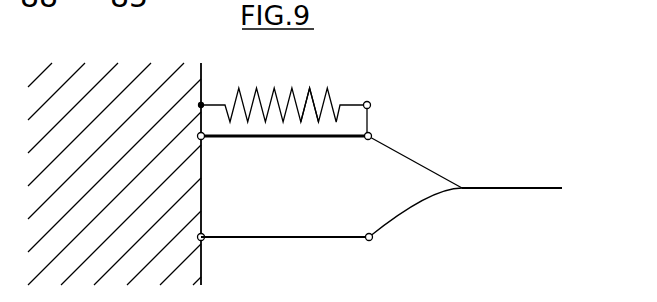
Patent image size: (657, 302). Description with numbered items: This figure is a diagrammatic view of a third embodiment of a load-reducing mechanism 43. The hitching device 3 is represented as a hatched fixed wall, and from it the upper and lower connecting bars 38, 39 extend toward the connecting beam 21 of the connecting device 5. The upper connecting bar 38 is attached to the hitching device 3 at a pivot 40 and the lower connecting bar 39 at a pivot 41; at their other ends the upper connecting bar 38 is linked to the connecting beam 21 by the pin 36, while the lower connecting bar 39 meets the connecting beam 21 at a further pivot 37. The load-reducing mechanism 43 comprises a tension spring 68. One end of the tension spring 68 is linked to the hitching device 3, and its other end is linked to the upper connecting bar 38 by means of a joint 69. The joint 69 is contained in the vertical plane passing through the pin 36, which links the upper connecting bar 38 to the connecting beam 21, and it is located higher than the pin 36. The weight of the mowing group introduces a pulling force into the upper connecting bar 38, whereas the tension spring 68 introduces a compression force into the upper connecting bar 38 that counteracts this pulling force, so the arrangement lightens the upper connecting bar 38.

The hitching device 3 is at (85, 70).
The connecting device 5 is at (554, 168).
The connecting beam 21 is at (492, 189).
The pin 36 is at (371, 133).
The pivot joint 37 is at (373, 241).
The upper connecting bar 38 is at (310, 138).
The lower connecting bar 39 is at (302, 235).
The fixed pivot 40 is at (204, 140).
The fixed pivot 41 is at (206, 234).
The load-reducing mechanism 43 is at (253, 88).
The tension spring 68 is at (309, 89).
The joint 69 is at (370, 102).